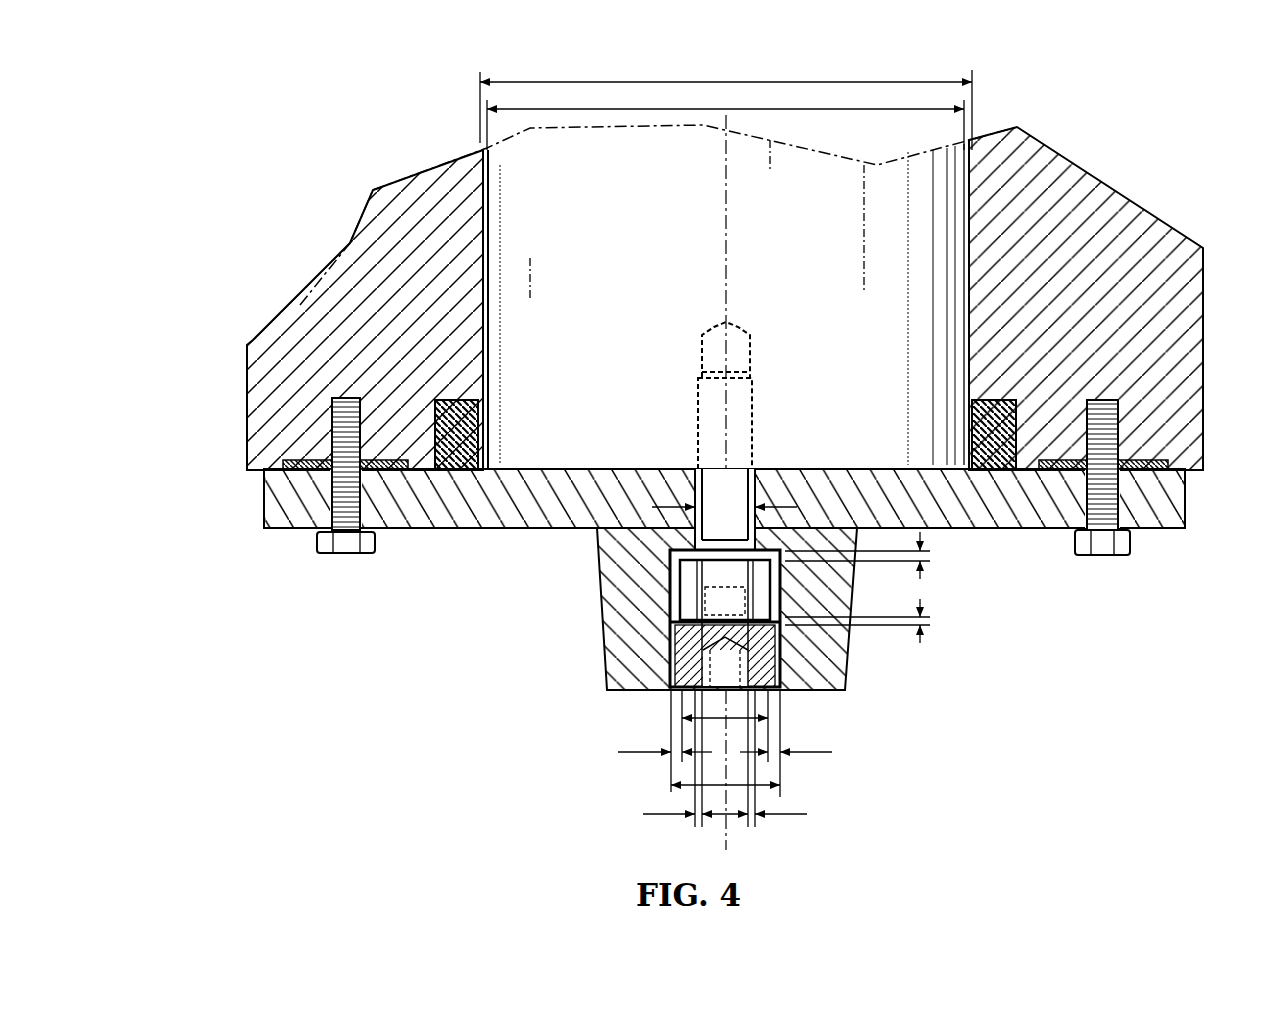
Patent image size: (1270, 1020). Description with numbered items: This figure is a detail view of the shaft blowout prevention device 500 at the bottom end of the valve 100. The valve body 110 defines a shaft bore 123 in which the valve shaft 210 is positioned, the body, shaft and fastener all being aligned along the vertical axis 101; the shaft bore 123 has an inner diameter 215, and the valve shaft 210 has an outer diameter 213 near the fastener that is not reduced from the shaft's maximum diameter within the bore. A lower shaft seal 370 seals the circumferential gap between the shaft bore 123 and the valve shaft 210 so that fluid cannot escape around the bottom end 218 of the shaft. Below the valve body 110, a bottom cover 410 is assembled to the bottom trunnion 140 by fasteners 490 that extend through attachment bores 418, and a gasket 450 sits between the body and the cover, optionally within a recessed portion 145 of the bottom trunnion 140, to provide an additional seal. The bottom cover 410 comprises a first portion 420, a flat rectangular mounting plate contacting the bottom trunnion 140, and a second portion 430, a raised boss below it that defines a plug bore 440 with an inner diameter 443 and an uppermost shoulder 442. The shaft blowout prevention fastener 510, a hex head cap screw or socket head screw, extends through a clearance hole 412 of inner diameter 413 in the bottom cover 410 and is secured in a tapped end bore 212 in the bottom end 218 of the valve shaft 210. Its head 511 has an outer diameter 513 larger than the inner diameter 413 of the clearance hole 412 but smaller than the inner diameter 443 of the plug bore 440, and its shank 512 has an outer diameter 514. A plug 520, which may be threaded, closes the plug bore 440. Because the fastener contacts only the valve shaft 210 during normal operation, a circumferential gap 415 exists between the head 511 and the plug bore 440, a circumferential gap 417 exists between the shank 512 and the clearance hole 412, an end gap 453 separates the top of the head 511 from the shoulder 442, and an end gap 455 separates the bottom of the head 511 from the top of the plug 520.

The valve 100 is at (702, 461).
The vertical axis 101 is at (733, 205).
The valve body 110 is at (246, 388).
The shaft bore 123 is at (966, 278).
The bottom trunnion 140 is at (246, 437).
The recessed portion 145 is at (1062, 470).
The valve shaft 210 is at (487, 180).
The end bore 212 is at (712, 340).
The outer diameter 213 is at (566, 110).
The inner diameter 215 is at (699, 100).
The bottom end 218 is at (555, 470).
The lower shaft seal 370 is at (972, 413).
The bottom cover 410 is at (433, 532).
The clearance hole 412 is at (740, 522).
The inner diameter 413 is at (655, 505).
The circumferential gap 415 is at (632, 752).
The circumferential gap 417 is at (788, 815).
The attachment bore 418 is at (332, 500).
The first portion 420 is at (262, 528).
The second portion 430 is at (606, 690).
The plug bore 440 is at (783, 592).
The shoulder 442 is at (690, 590).
The inner diameter 443 is at (712, 787).
The gasket 450 is at (312, 457).
The end gap 453 is at (927, 553).
The end gap 455 is at (927, 622).
The fastener 490 is at (346, 556).
The shaft blowout prevention device 500 is at (753, 425).
The shaft blowout prevention fastener 510 is at (753, 455).
The head 511 is at (690, 622).
The shank 512 is at (700, 572).
The outer diameter 513 is at (738, 732).
The outer diameter 514 is at (730, 818).
The plug 520 is at (690, 645).